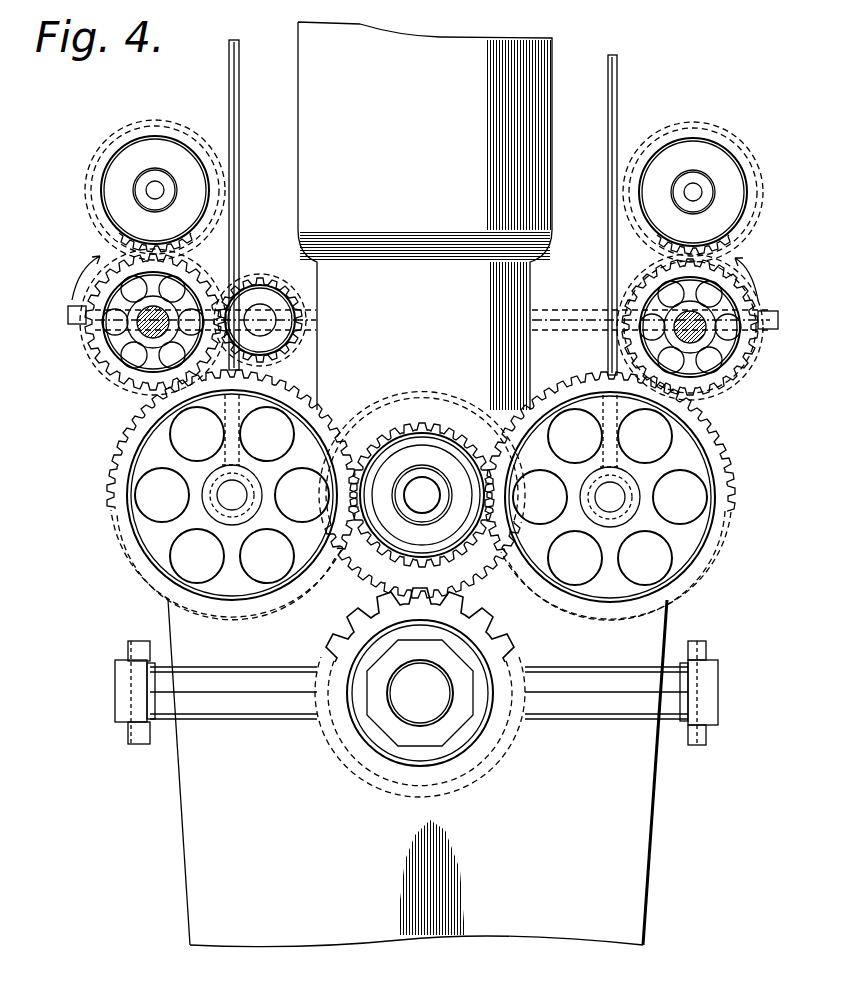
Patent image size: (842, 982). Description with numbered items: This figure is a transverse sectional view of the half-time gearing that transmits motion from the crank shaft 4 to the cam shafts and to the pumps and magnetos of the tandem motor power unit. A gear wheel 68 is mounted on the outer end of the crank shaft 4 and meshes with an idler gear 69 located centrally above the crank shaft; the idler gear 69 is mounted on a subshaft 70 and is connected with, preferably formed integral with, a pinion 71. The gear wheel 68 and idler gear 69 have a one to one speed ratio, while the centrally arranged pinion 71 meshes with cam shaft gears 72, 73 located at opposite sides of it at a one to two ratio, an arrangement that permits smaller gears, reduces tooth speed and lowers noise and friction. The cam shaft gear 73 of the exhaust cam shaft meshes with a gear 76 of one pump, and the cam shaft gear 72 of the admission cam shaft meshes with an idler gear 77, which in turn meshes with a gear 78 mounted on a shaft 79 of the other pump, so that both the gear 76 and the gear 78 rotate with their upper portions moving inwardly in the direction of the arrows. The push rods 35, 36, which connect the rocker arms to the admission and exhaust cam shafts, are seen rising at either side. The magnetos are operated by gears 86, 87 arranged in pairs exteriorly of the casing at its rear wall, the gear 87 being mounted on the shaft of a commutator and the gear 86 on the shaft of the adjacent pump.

The crank shaft 4 is at (419, 693).
The push rod 35 is at (240, 100).
The push rod 36 is at (607, 105).
The gear wheel 68 is at (356, 625).
The idler gear 69 is at (474, 598).
The subshaft 70 is at (422, 492).
The pinion 71 is at (395, 432).
The cam shaft gear 72 is at (312, 427).
The cam shaft gear 73 is at (715, 430).
The gear 76 is at (715, 386).
The idler gear 77 is at (290, 352).
The gear 78 is at (215, 370).
The shaft 79 is at (148, 332).
The magneto gear 86 is at (745, 285).
The magneto gear 87 is at (748, 193).